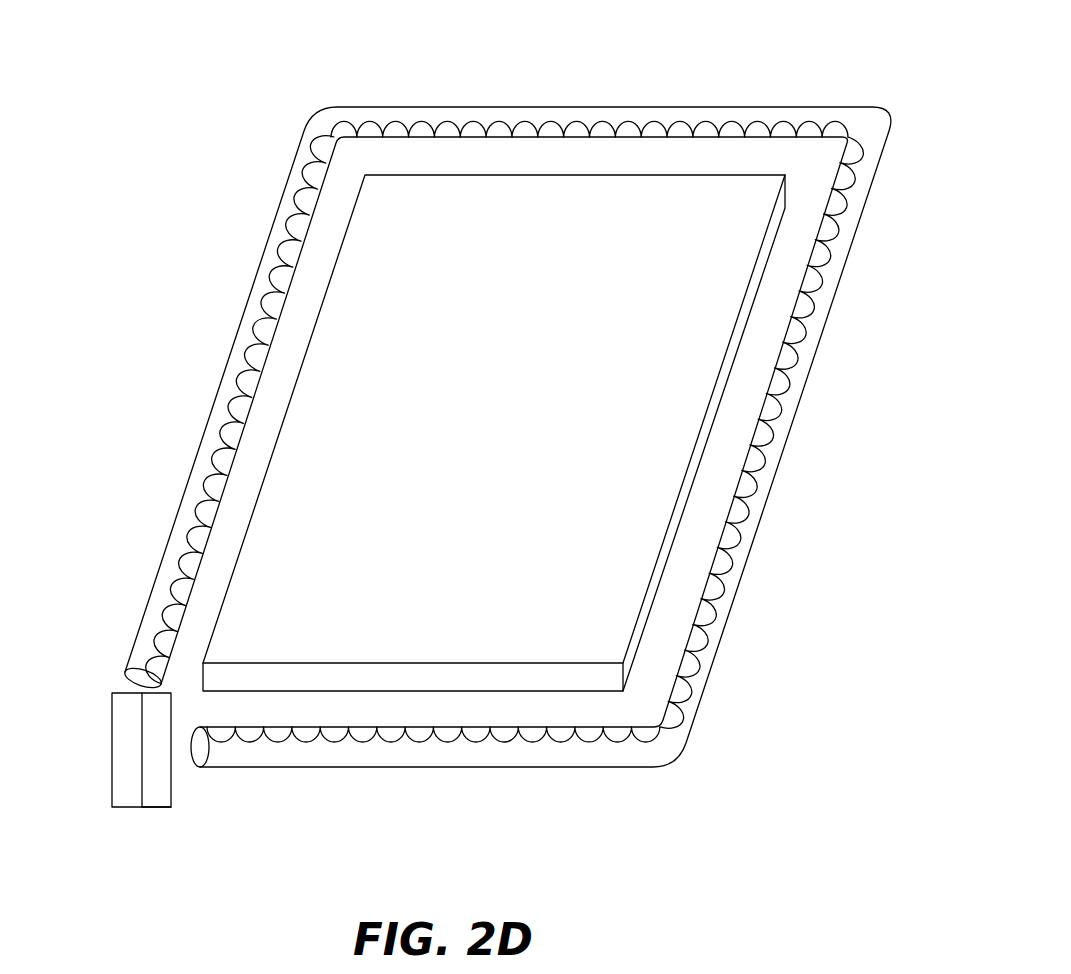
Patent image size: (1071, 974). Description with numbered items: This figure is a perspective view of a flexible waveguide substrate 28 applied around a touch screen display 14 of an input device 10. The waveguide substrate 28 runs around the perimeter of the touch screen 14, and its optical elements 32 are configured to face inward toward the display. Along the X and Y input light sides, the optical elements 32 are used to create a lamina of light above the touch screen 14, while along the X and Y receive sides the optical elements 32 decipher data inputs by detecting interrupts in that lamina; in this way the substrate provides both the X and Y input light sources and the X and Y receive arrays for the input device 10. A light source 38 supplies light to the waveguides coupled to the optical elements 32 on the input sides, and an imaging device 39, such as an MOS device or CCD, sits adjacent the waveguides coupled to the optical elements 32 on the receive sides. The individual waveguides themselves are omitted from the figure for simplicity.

The input device 10 is at (154, 35).
The touch screen display 14 is at (528, 397).
The waveguide substrate 28 is at (742, 557).
The optical elements 32 is at (493, 128).
The light source 38 is at (120, 758).
The imaging device 39 is at (160, 808).